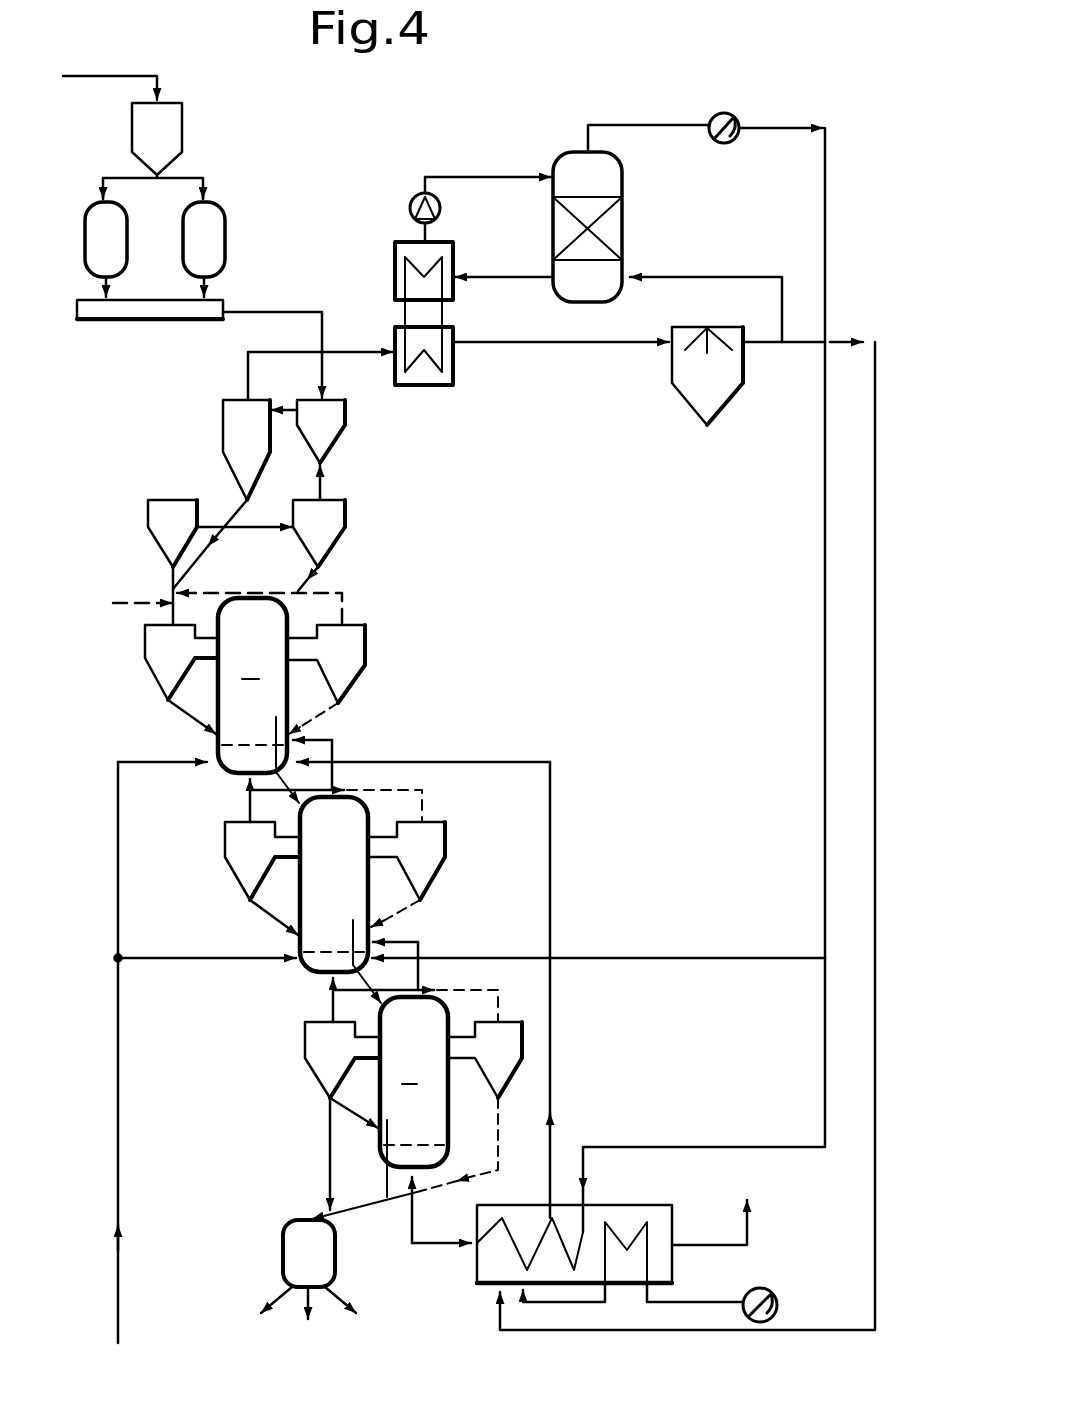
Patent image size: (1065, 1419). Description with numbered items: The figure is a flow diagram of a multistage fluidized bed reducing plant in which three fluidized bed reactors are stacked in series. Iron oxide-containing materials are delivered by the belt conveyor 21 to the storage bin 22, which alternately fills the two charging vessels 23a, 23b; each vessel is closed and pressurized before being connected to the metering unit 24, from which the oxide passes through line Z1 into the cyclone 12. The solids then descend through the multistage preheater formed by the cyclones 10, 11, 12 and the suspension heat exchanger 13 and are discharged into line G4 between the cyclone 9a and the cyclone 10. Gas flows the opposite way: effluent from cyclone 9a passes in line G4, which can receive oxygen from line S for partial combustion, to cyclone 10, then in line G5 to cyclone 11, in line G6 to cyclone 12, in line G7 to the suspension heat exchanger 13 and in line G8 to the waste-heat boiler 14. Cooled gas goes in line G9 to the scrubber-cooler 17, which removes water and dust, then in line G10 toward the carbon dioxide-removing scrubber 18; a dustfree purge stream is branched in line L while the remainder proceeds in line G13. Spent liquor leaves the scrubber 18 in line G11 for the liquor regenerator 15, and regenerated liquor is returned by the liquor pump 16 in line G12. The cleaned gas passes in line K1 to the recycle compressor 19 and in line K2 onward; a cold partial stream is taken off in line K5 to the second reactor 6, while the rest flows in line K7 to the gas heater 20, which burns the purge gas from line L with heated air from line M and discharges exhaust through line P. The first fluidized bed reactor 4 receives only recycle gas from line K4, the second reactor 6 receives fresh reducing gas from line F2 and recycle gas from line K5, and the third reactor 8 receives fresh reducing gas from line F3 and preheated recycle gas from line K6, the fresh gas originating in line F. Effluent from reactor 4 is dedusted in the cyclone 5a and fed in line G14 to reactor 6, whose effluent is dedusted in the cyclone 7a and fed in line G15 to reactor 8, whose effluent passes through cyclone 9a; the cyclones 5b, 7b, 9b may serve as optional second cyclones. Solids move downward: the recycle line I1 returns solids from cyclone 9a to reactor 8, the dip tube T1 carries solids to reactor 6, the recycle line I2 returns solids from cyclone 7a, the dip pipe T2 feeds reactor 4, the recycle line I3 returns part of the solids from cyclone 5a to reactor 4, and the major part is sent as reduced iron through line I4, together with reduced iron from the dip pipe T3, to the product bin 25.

The belt conveyor 21 is at (107, 76).
The storage bin for oxide 22 is at (182, 128).
The charging vessel 23a is at (86, 228).
The charging vessel 23b is at (224, 233).
The metering unit 24 is at (142, 322).
The line Z1 is at (276, 311).
The suspension heat exchanger 13 is at (223, 432).
The cyclone 12 is at (344, 438).
The line G7 is at (283, 407).
The line G8 is at (357, 355).
The line G6 is at (324, 477).
The cyclone 10 is at (148, 510).
The cyclone 11 is at (345, 513).
The line G5 is at (251, 529).
The line G4 is at (171, 578).
The line S is at (125, 604).
The fluidized bed reactor 8 is at (258, 700).
The cyclone 9a is at (146, 656).
The cyclone 9b is at (360, 648).
The recycle line I1 is at (193, 721).
The dip tube T1 is at (287, 722).
The line K6 is at (430, 760).
The line F3 is at (148, 765).
The line G15 is at (248, 797).
The fluidized bed reactor 6 is at (358, 823).
The cyclone 7a is at (232, 845).
The cyclone 7b is at (445, 845).
The recycle line I2 is at (263, 916).
The dip pipe T2 is at (387, 928).
The line K5 is at (684, 956).
The line F2 is at (155, 962).
The line F is at (118, 1283).
The line G14 is at (330, 997).
The fluidized bed reactor 4 is at (414, 1097).
The cyclone 5a is at (317, 1047).
The cyclone 5b is at (510, 1047).
The solids stream I3 is at (355, 1116).
The line I4 is at (328, 1157).
The dip pipe T3 is at (357, 1208).
The product bin 25 is at (295, 1247).
The line K4 is at (424, 1247).
The gas heater 20 is at (625, 1220).
The line P is at (708, 1243).
The line M is at (710, 1302).
The line L is at (877, 721).
The line K2 is at (826, 620).
The line K7 is at (826, 1037).
The liquor regenerator 15 is at (395, 263).
The waste-heat boiler 14 is at (427, 387).
The liquor pump 16 is at (441, 208).
The line G12 is at (480, 175).
The CO2-removing scrubber 18 is at (622, 216).
The line G11 is at (505, 280).
The line K1 is at (658, 124).
The recycle compressor 19 is at (740, 118).
The line G9 is at (557, 344).
The scrubber-cooler 17 is at (695, 398).
The line G13 is at (705, 274).
The line G10 is at (784, 365).